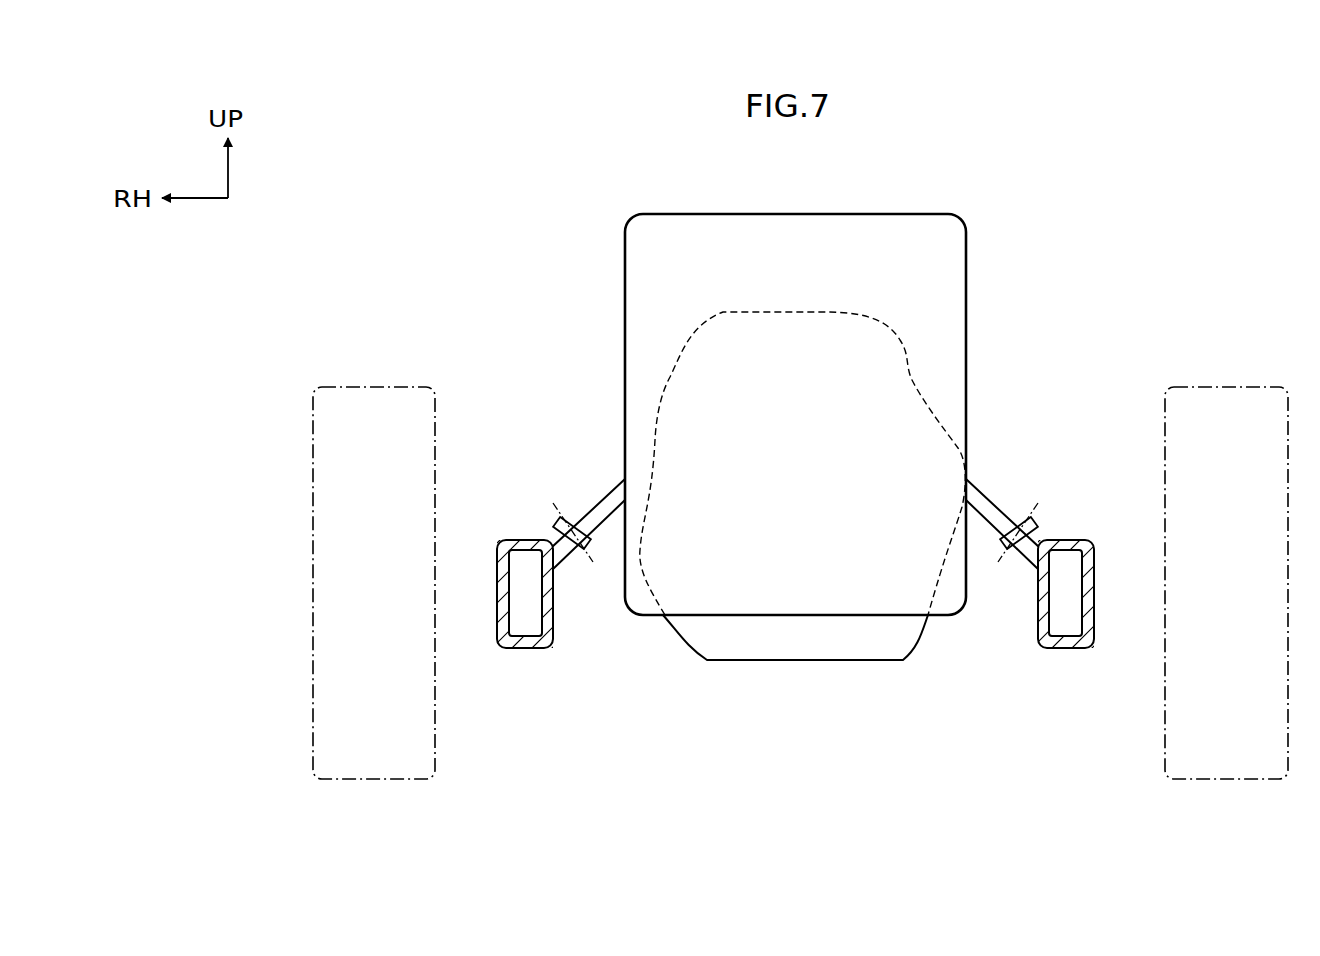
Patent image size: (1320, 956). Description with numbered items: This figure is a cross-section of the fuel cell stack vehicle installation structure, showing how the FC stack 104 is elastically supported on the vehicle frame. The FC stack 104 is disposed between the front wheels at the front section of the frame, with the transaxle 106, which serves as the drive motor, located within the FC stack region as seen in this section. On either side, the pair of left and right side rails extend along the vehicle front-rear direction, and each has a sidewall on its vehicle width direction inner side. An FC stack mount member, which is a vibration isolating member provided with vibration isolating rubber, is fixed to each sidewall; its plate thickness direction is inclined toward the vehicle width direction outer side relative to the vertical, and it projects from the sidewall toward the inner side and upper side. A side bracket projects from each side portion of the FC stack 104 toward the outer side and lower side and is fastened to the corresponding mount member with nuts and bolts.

The fuel cell stack 104 is at (966, 268).
The transaxle 106 is at (912, 380).